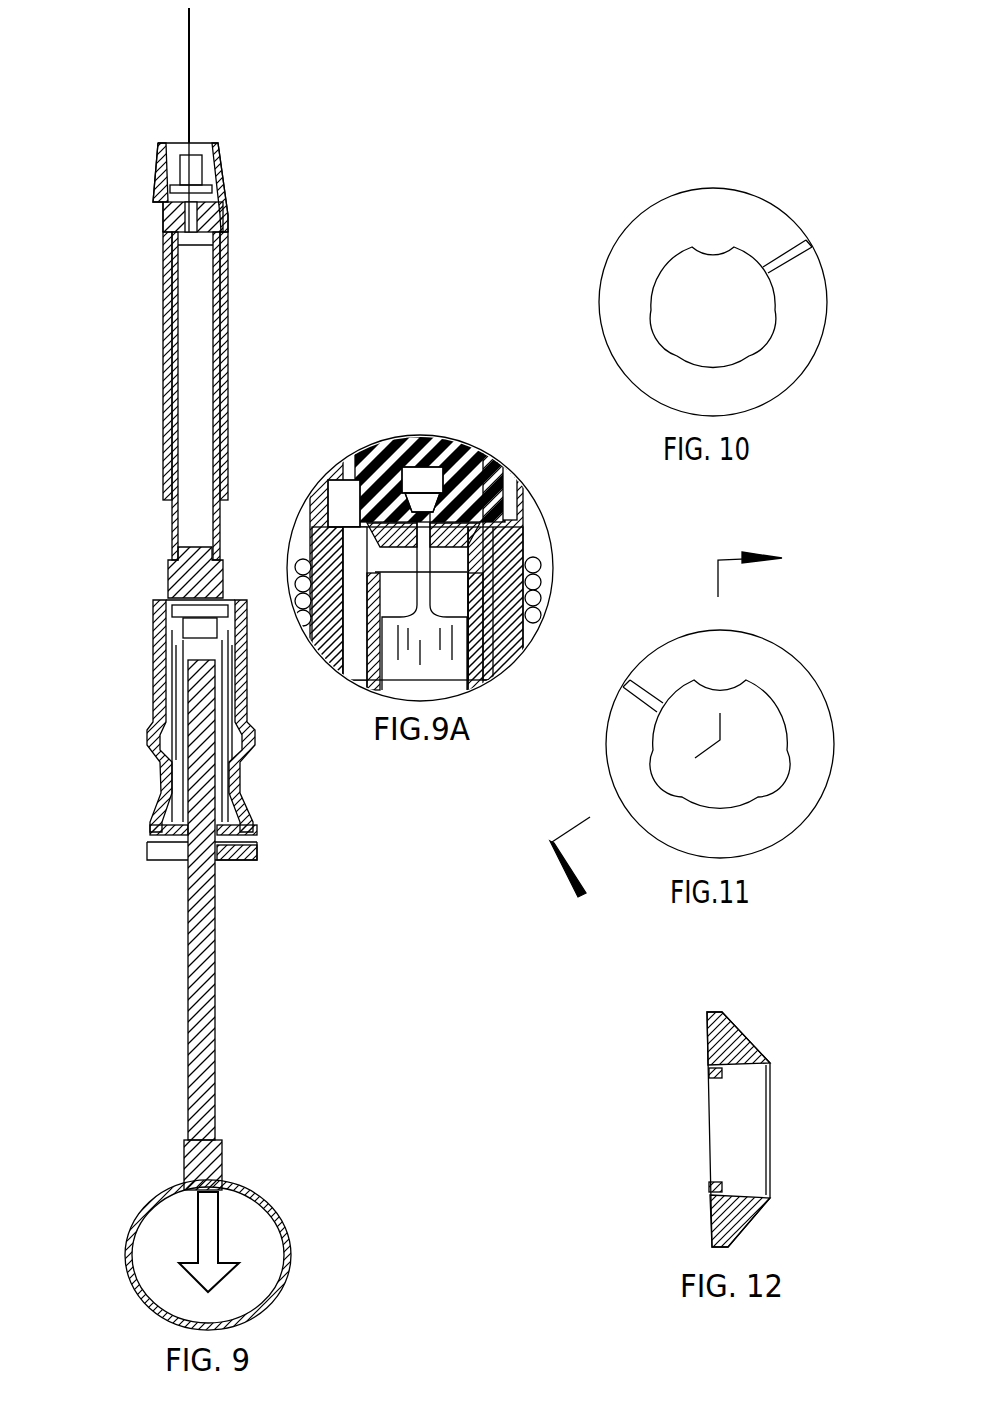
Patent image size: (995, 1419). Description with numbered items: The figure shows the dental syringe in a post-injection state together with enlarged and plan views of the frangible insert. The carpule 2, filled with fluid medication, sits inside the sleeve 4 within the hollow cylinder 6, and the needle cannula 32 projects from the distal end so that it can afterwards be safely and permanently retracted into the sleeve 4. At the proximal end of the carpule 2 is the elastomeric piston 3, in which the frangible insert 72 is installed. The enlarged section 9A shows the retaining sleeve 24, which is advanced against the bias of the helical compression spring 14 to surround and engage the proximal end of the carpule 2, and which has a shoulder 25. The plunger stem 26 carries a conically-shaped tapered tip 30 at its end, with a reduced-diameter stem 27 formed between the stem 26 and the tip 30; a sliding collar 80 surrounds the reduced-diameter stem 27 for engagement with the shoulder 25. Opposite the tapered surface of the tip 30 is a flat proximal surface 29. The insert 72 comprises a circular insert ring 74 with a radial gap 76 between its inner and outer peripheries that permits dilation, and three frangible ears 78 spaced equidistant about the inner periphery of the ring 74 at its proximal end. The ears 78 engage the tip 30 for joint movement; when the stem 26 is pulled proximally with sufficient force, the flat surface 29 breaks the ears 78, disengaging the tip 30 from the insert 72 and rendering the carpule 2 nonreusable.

In FIG. 9, the needle cannula 32 is at (190, 52).
In FIG. 9, the hollow cylinder 6 is at (230, 257).
In FIG. 9, the sleeve 4 is at (225, 348).
In FIG. 9, the carpule 2 is at (193, 398).
In FIG. 9A, the carpule 2 is at (490, 457).
In FIG. 9, the piston 3 is at (177, 552).
In FIG. 9A, the piston 3 is at (437, 455).
In FIG. 9, the section 9a 9A is at (170, 597).
In FIG. 9A, the frangible insert 72 is at (360, 450).
In FIG. 10, the frangible insert 72 is at (772, 171).
In FIG. 11, the frangible insert 72 is at (820, 641).
In FIG. 12, the frangible insert 72 is at (783, 1013).
In FIG. 9A, the sliding collar 80 is at (330, 480).
In FIG. 9A, the tapered tip 30 is at (403, 457).
In FIG. 9A, the flat proximal surface 29 is at (515, 487).
In FIG. 9A, the shoulder 25 is at (520, 537).
In FIG. 9A, the reduced-diameter stem 27 is at (425, 600).
In FIG. 9A, the helical compression spring 14 is at (533, 580).
In FIG. 9A, the retaining sleeve 24 is at (517, 627).
In FIG. 9A, the plunger stem 26 is at (435, 683).
In FIG. 10, the insert ring 74 is at (770, 225).
In FIG. 11, the insert ring 74 is at (810, 717).
In FIG. 12, the insert ring 74 is at (753, 1060).
In FIG. 10, the radial gap 76 is at (793, 257).
In FIG. 11, the radial gap 76 is at (628, 688).
In FIG. 10, the frangible ears 78 is at (712, 243).
In FIG. 11, the frangible ears 78 is at (718, 682).
In FIG. 12, the frangible ears 78 is at (708, 1075).